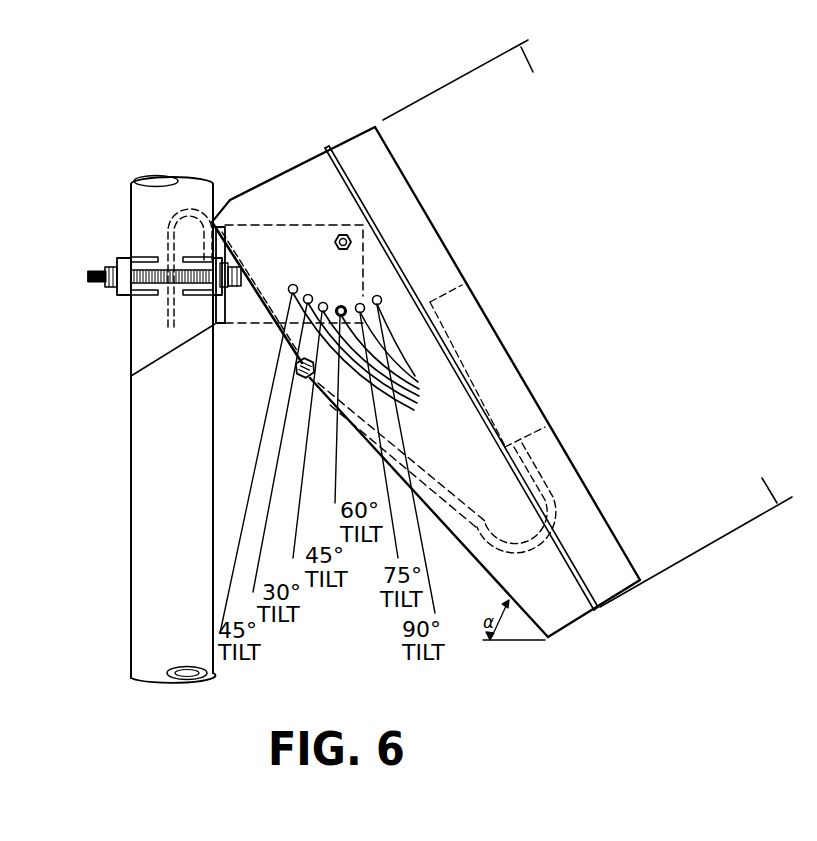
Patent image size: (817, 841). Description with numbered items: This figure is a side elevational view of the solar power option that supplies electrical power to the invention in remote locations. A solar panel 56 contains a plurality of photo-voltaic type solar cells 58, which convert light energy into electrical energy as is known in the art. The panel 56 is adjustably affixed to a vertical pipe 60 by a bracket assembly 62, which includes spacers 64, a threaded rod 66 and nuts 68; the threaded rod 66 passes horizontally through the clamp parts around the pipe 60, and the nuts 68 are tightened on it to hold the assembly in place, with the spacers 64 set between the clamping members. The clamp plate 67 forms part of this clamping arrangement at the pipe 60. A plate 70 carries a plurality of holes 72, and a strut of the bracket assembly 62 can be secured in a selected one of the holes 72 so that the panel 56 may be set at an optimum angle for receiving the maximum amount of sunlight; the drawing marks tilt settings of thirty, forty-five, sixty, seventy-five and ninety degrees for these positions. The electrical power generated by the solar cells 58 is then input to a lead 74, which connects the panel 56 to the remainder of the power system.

The solar panel 56 is at (627, 587).
The photo-voltaic type solar cells 58 is at (493, 383).
The pipe 60 is at (130, 557).
The bracket assembly 62 is at (267, 250).
The spacers 64 is at (218, 294).
The threaded rod 66 is at (86, 277).
The clamp plate 67 is at (123, 258).
The nuts 68 is at (106, 289).
The plate 70 is at (304, 226).
The holes 72 is at (368, 352).
The lead 74 is at (476, 528).